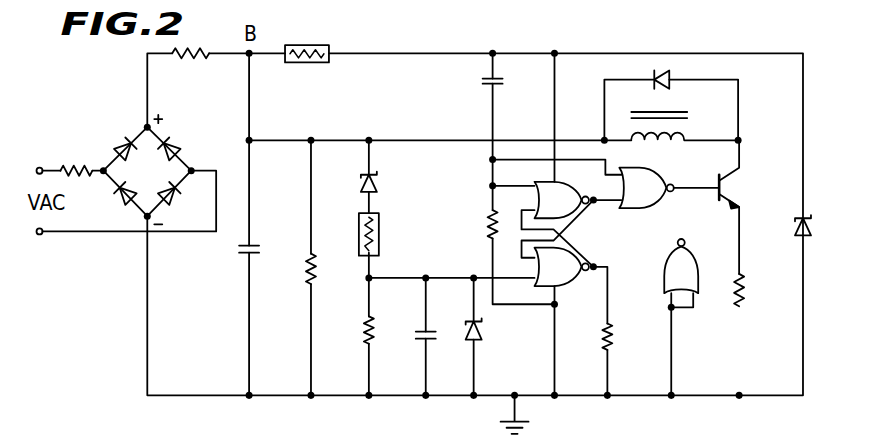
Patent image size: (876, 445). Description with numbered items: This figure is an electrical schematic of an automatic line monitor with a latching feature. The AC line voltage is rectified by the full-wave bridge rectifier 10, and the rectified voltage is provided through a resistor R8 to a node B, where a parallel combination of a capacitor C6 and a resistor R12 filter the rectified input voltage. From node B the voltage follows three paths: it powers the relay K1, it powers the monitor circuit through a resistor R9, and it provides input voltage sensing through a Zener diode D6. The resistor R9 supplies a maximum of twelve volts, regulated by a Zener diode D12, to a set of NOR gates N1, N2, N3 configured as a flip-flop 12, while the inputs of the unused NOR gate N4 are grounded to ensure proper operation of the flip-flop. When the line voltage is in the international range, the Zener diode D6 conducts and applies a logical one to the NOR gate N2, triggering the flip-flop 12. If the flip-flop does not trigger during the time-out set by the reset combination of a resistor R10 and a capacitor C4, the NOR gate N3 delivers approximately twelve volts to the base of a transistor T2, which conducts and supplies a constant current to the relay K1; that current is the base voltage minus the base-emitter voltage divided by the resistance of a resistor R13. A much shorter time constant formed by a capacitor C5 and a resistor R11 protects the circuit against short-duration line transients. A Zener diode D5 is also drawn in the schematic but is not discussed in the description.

The full-wave bridge rectifier 10 is at (136, 127).
The flip-flop 12 is at (595, 206).
The resistor R8 is at (190, 70).
The resistor R9 is at (307, 38).
The capacitor C4 is at (508, 82).
The relay K1 is at (676, 105).
The capacitor C6 is at (265, 249).
The resistor R12 is at (328, 271).
The Zener diode D6 is at (386, 184).
The resistor R11 is at (387, 234).
The resistor R10 is at (471, 225).
The capacitor C5 is at (410, 329).
The zener diode D5 is at (489, 333).
The NOR gate N1 is at (573, 195).
The NOR gate N2 is at (570, 277).
The NOR gate N3 is at (645, 200).
The unused NOR gate N4 is at (663, 280).
The transistor T2 is at (741, 207).
The resistor R13 is at (757, 292).
The Zener diode D12 is at (825, 225).